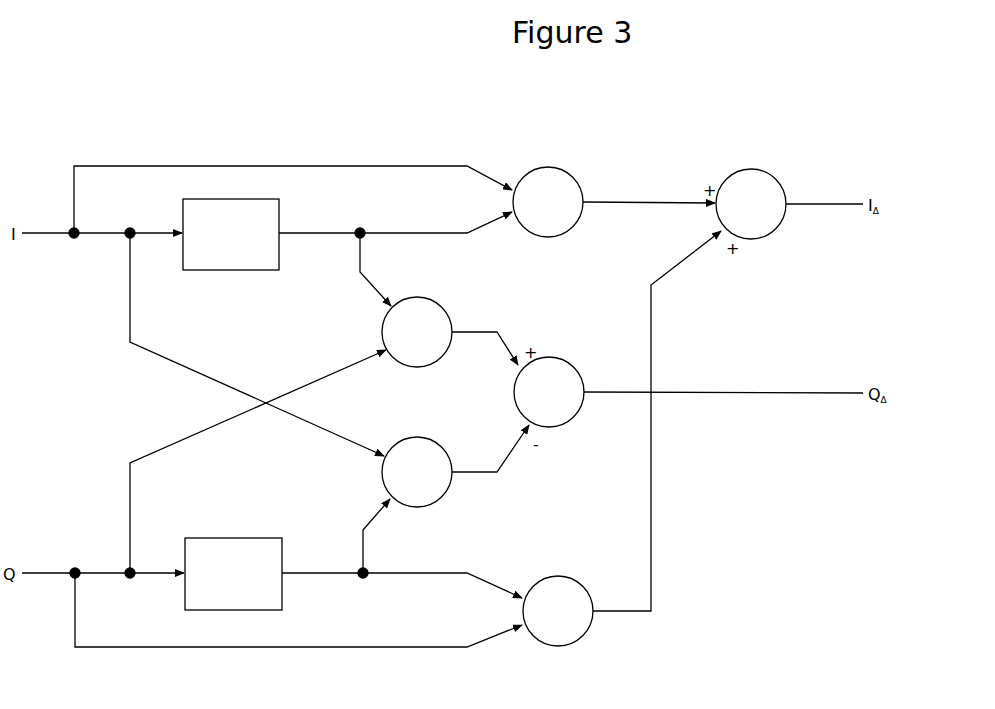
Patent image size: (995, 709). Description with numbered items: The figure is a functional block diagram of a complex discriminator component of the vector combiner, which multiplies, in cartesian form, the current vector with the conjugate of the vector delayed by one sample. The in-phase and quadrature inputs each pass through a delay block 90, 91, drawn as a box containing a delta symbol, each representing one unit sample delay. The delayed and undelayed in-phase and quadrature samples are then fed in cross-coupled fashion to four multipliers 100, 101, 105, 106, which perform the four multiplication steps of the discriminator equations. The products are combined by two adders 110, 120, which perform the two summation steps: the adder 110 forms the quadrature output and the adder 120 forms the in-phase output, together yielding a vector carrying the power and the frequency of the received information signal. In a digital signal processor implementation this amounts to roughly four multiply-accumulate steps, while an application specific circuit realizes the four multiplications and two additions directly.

The sample delay block 90 is at (231, 272).
The sample delay block 91 is at (223, 612).
The multiplier 100 is at (547, 166).
The multiplier 101 is at (555, 647).
The multiplier 105 is at (412, 296).
The multiplier 106 is at (418, 508).
The adder 110 is at (562, 356).
The adder 120 is at (768, 169).